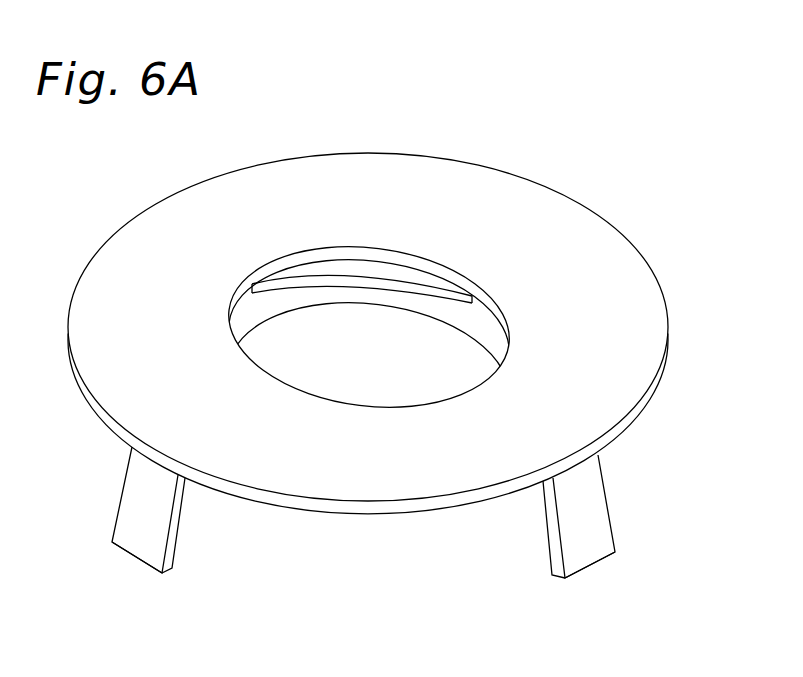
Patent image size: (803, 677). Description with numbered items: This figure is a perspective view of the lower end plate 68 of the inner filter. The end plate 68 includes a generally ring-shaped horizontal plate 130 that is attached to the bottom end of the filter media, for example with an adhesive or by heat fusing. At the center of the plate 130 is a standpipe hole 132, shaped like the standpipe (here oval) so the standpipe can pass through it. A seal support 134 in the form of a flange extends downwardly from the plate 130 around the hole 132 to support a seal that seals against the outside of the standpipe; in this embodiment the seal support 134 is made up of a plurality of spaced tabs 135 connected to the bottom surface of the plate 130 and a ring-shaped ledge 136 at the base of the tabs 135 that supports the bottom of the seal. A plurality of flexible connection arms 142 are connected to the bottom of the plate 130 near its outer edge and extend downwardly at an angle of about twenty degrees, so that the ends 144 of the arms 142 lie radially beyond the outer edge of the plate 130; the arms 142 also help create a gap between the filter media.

The lower end plate 68 is at (573, 156).
The horizontal plate 130 is at (597, 247).
The standpipe hole 132 is at (358, 377).
The seal support 134 is at (372, 245).
The spaced tabs 135 is at (300, 274).
The ring-shaped ledge 136 is at (422, 308).
The flexible connection arms 142 is at (132, 523).
The ends of the arms 144 is at (135, 560).